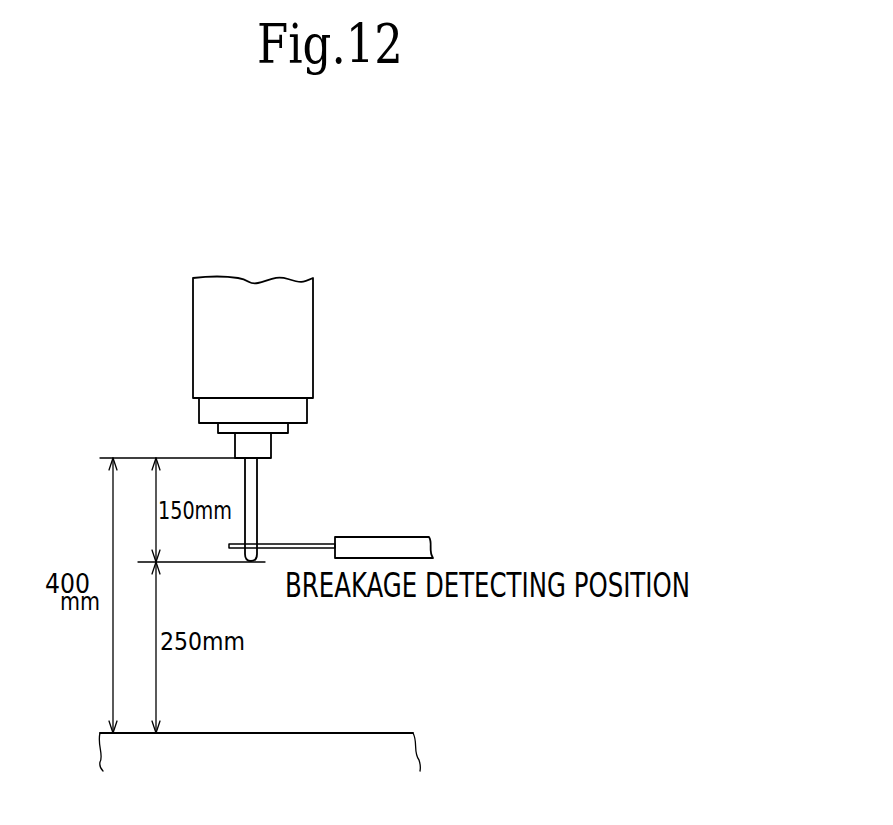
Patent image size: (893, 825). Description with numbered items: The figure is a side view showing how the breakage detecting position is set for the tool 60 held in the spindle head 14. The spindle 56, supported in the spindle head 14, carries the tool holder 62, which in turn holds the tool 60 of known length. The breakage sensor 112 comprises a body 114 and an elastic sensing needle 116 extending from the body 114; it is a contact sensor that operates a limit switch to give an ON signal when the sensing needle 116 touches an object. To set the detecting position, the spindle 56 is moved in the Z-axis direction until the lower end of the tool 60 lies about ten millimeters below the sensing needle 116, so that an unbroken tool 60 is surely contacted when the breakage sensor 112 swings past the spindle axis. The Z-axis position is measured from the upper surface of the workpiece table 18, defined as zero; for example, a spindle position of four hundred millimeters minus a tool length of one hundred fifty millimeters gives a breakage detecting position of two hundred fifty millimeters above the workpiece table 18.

The spindle head 14 is at (330, 326).
The spindle 56 is at (288, 430).
The tool holder 62 is at (268, 451).
The tool 60 is at (256, 505).
The breakage sensor 112 is at (365, 475).
The sensing needle 116 is at (321, 544).
The body 114 is at (405, 536).
The workpiece table 18 is at (458, 710).